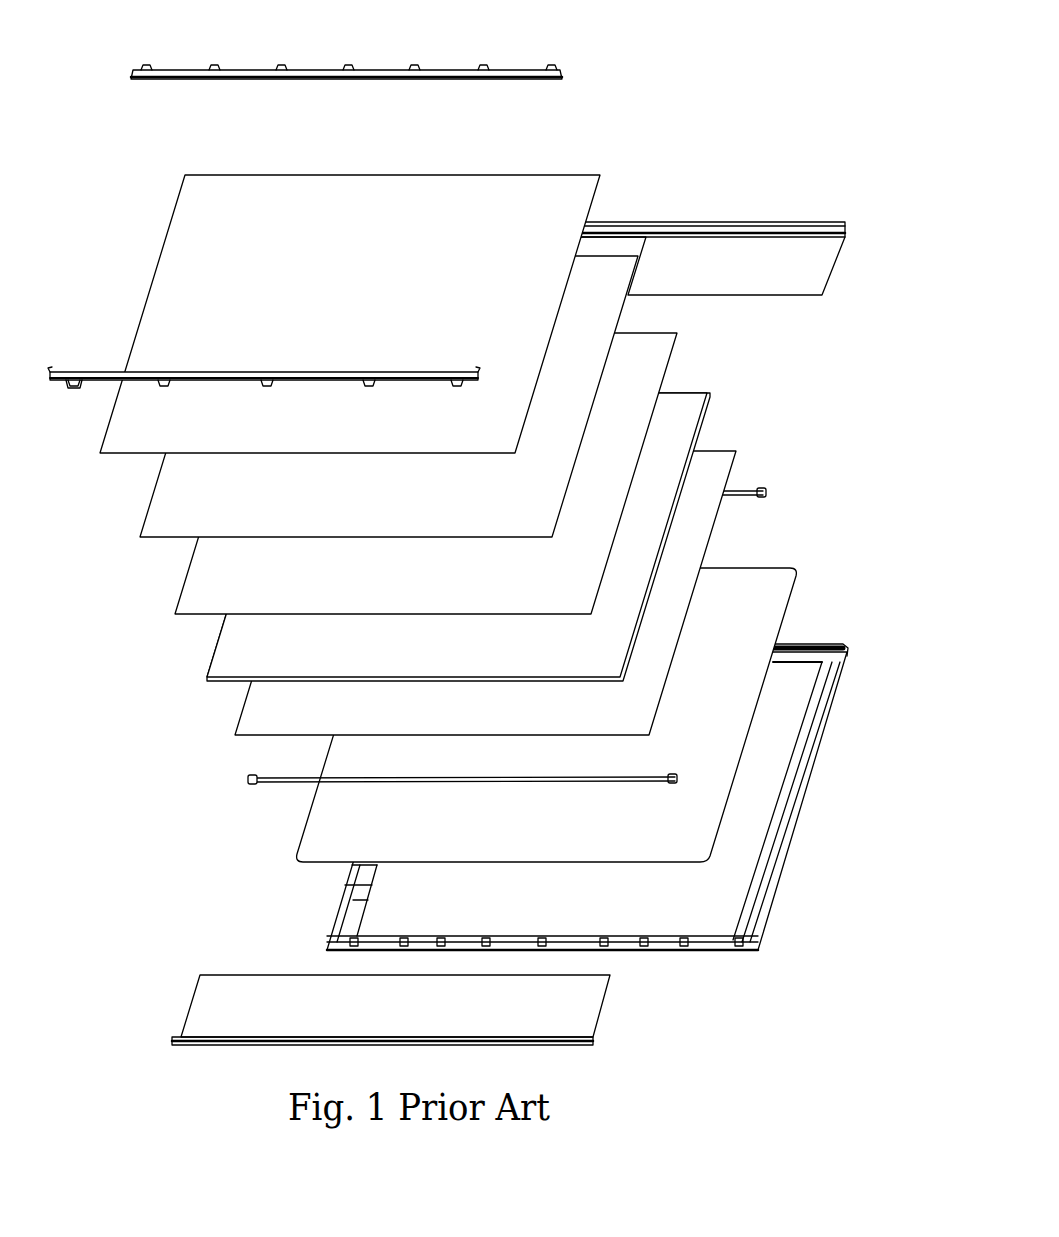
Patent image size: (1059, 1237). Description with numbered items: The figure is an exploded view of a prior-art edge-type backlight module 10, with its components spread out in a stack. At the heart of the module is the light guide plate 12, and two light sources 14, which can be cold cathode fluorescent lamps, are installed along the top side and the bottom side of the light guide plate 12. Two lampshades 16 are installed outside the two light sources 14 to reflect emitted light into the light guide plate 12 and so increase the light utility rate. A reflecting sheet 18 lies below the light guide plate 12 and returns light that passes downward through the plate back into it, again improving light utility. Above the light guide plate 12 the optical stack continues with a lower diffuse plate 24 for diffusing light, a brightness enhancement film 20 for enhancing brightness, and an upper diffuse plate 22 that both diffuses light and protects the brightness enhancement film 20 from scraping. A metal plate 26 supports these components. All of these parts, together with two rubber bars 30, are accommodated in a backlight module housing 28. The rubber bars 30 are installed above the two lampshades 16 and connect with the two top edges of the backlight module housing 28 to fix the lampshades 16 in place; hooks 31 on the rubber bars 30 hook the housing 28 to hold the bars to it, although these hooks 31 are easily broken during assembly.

The edge-type backlight module 10 is at (672, 58).
The light guide plate 12 is at (683, 398).
The light source 14 is at (745, 495).
The lampshade 16 is at (780, 245).
The reflecting sheet 18 is at (710, 458).
The brightness enhancement film 20 is at (612, 268).
The upper diffuse plate 22 is at (530, 180).
The lower diffuse plate 24 is at (652, 335).
The metal plate 26 is at (745, 575).
The backlight module housing 28 is at (820, 688).
The rubber bar 30 is at (515, 70).
The hook 31 is at (72, 388).